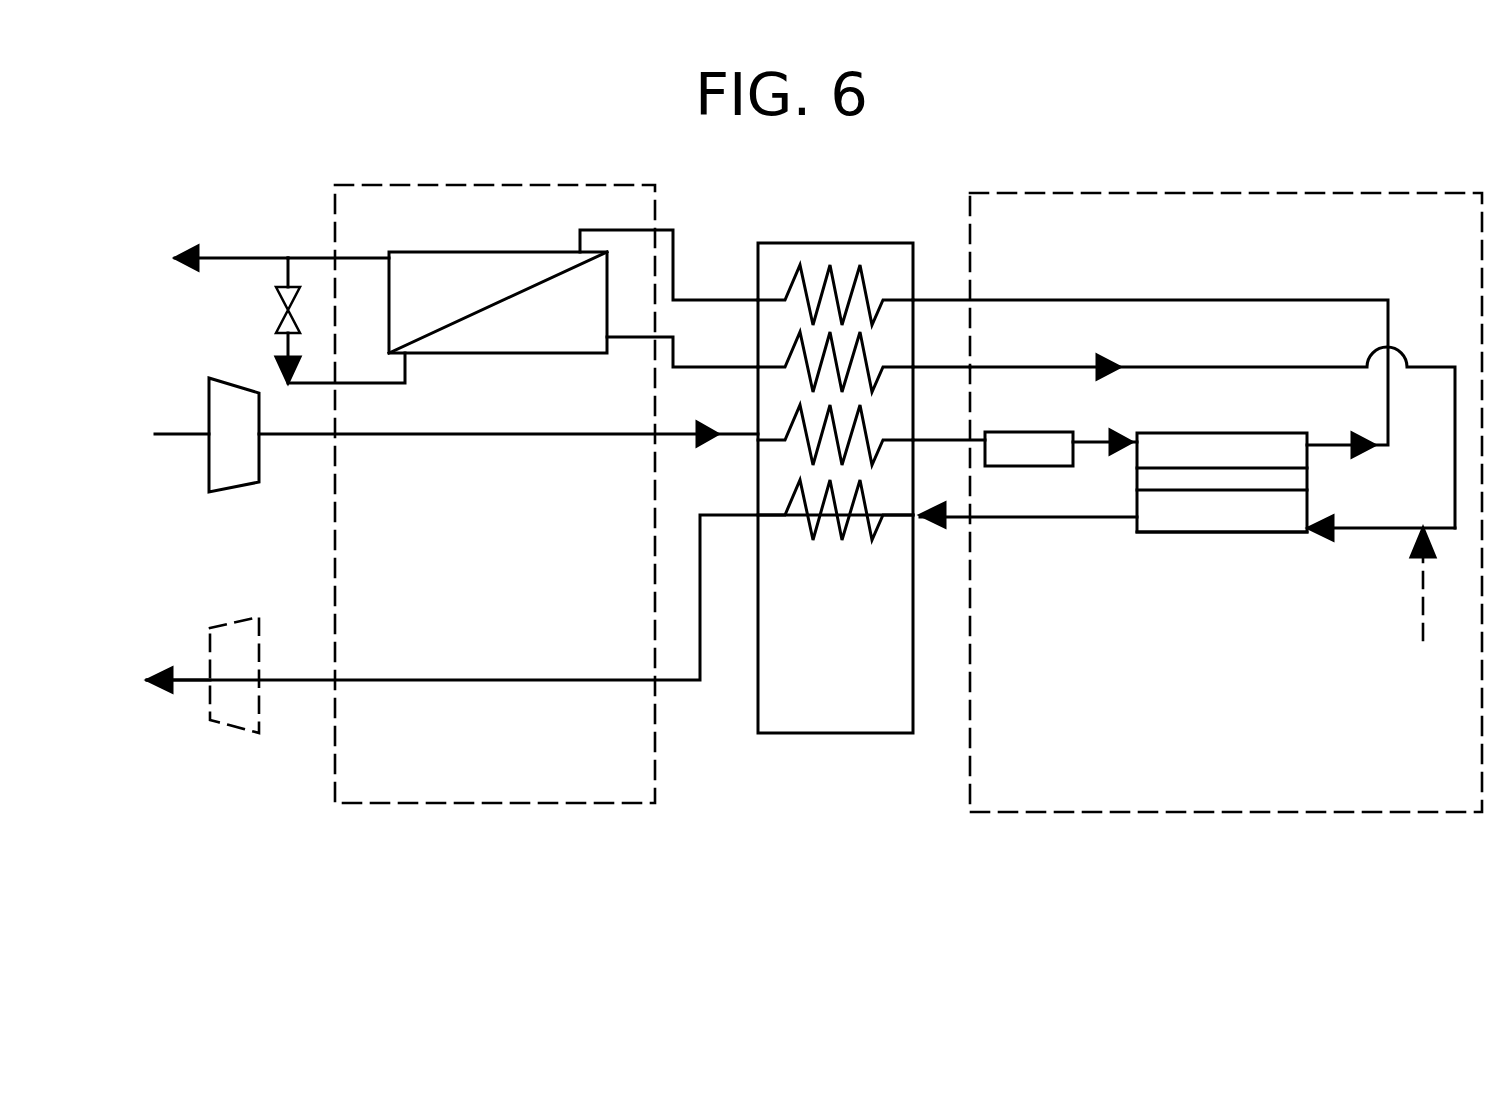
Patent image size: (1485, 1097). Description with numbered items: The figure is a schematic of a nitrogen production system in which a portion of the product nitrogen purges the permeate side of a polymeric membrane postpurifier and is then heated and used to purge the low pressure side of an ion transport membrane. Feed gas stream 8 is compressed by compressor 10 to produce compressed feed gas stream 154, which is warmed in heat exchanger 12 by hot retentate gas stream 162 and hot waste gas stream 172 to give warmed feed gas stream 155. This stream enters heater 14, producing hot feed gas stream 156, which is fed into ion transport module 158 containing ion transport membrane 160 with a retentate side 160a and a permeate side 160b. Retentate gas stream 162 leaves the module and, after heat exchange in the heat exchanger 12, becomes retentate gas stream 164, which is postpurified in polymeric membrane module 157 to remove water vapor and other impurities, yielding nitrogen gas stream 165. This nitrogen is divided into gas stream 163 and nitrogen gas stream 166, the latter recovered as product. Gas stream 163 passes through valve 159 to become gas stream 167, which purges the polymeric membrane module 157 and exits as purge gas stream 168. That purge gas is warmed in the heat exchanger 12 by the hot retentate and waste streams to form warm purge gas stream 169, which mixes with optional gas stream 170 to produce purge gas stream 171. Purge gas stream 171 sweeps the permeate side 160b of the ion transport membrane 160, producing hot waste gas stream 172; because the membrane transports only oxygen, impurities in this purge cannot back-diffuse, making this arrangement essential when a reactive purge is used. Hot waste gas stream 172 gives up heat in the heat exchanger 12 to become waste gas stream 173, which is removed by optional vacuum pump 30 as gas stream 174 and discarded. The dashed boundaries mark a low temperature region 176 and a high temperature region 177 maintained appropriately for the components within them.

The feed gas stream 8 is at (192, 436).
The compressor 10 is at (240, 490).
The heat exchanger 12 is at (850, 735).
The heater 14 is at (1050, 468).
The optional vacuum pump 30 is at (225, 722).
The compressed feed gas stream 154 is at (509, 440).
The warmed feed gas stream 155 is at (948, 372).
The hot feed gas stream 156 is at (1093, 450).
The polymeric membrane module 157 is at (420, 250).
The ion transport module 158 is at (1287, 535).
The valve 159 is at (268, 303).
The ion transport membrane 160 is at (1281, 505).
The retentate side 160a is at (1232, 466).
The permeate side 160b is at (1250, 492).
The retentate gas stream 162 is at (1338, 440).
The gas stream 163 is at (283, 274).
The retentate gas stream 164 is at (605, 230).
The nitrogen gas stream 165 is at (303, 250).
The nitrogen gas stream 166 is at (217, 256).
The gas stream 167 is at (281, 343).
The purge gas stream 168 is at (638, 340).
The warm purge gas stream 169 is at (1070, 330).
The optional gas stream 170 is at (1420, 605).
The purge gas stream 171 is at (1372, 535).
The hot waste gas stream 172 is at (1045, 520).
The waste gas stream 173 is at (460, 678).
The gas stream 174 is at (187, 670).
The low temperature region 176 is at (626, 805).
The high temperature region 177 is at (1293, 812).